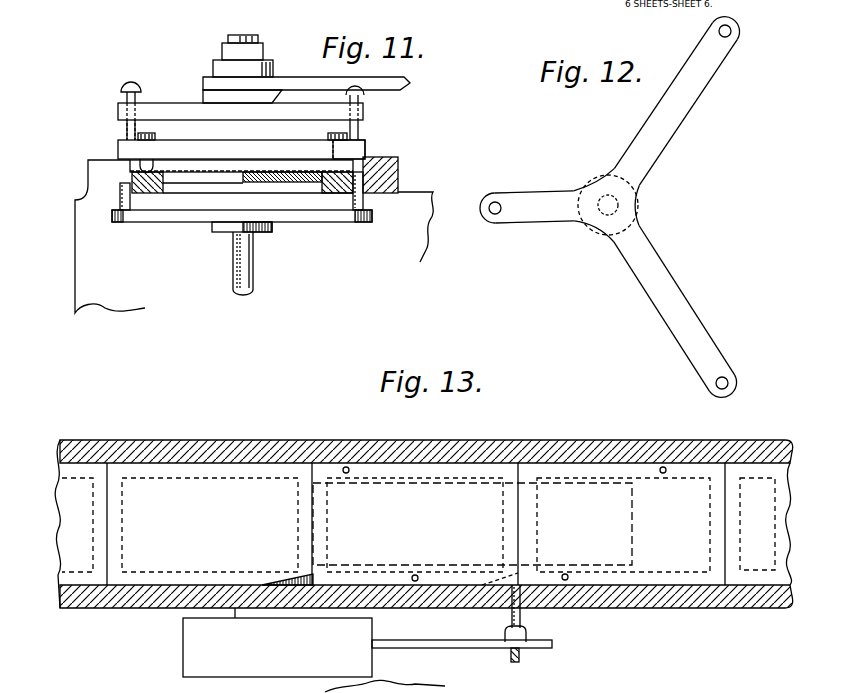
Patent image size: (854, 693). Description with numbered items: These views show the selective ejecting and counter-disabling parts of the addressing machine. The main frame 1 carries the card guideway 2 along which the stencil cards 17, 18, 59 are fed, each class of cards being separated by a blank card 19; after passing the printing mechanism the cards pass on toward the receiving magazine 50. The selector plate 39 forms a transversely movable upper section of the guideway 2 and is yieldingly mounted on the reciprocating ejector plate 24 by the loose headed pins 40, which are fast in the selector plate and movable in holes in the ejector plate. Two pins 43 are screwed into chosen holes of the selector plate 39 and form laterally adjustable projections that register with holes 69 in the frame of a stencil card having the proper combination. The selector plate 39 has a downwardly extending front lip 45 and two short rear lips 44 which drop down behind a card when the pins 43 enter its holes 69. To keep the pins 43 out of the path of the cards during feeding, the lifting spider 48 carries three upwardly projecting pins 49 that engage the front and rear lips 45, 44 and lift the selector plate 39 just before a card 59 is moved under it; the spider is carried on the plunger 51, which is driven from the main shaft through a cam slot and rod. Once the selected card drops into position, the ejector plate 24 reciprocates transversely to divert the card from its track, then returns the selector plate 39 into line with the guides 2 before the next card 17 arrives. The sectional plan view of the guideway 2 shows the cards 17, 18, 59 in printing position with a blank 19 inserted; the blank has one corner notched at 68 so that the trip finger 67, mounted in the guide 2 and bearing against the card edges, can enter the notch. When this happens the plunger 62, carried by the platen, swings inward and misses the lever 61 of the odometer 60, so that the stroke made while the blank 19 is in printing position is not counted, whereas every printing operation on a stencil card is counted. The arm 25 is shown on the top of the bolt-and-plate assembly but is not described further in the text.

In FIG. 11, the main frame 1 is at (80, 258).
In FIG. 11, the card guideway 2 is at (398, 172).
In FIG. 13, the card guideway 2 is at (256, 438).
In FIG. 13, the stencil card 17 is at (693, 470).
In FIG. 13, the stencil card 18 is at (468, 470).
In FIG. 13, the blank card 19 is at (233, 497).
In FIG. 11, the ejector plate 24 is at (165, 110).
In FIG. 11, the arm 25 is at (412, 82).
In FIG. 11, the selector plate 39 is at (283, 147).
In FIG. 11, the loose headed pins 40 is at (126, 132).
In FIG. 11, the pins 43 is at (158, 138).
In FIG. 11, the rear lips 44 is at (367, 153).
In FIG. 11, the front lip 45 is at (122, 170).
In FIG. 11, the lifting spider 48 is at (193, 218).
In FIG. 12, the lifting spider 48 is at (640, 140).
In FIG. 11, the pins 49 is at (122, 200).
In FIG. 12, the pins 49 is at (731, 37).
In FIG. 12, the receiving magazine 50 is at (495, 208).
In FIG. 11, the plunger 51 is at (252, 276).
In FIG. 12, the plunger 51 is at (615, 207).
In FIG. 11, the stencil card 59 is at (299, 187).
In FIG. 13, the stencil card 59 is at (750, 470).
In FIG. 13, the odometer 60 is at (192, 650).
In FIG. 13, the lever 61 is at (470, 650).
In FIG. 13, the plunger 62 is at (515, 662).
In FIG. 13, the trip finger 67 is at (522, 614).
In FIG. 13, the notch 68 is at (300, 580).
In FIG. 13, the holes 69 is at (346, 467).